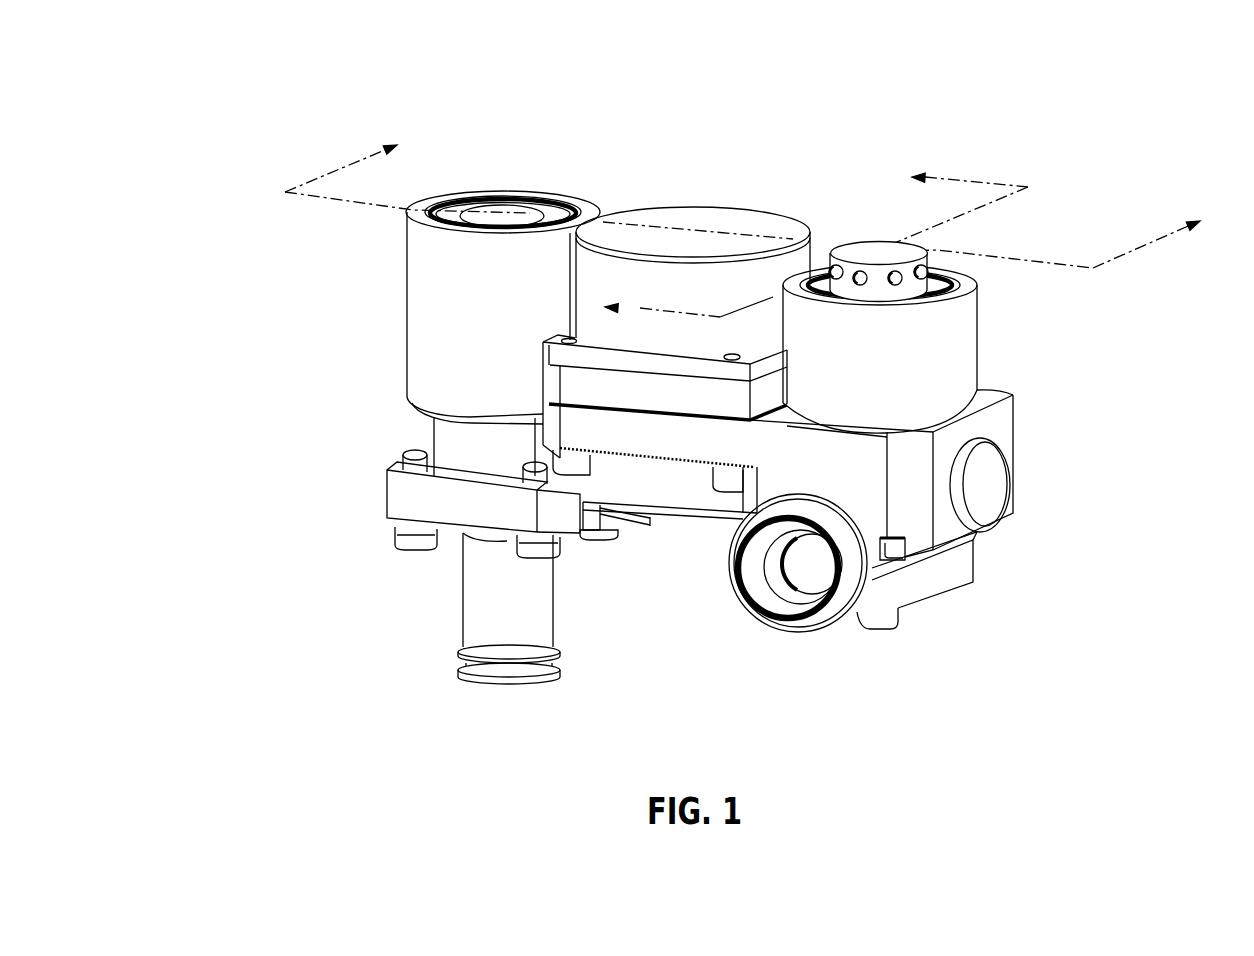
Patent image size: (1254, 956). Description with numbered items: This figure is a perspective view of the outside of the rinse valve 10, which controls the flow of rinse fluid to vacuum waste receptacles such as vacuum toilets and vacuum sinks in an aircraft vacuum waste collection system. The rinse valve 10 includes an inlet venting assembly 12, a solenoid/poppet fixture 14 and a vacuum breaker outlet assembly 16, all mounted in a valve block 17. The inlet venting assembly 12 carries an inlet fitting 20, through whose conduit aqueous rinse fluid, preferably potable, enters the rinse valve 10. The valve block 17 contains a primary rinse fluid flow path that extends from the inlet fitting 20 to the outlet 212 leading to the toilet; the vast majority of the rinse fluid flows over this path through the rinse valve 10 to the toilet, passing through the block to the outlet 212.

The rinse valve 10 is at (258, 107).
The inlet venting assembly 12 is at (515, 207).
The solenoid/poppet fixture 14 is at (703, 215).
The vacuum breaker outlet assembly 16 is at (872, 241).
The valve block 17 is at (386, 492).
The inlet fitting 20 is at (477, 607).
The outlet 212 is at (807, 577).